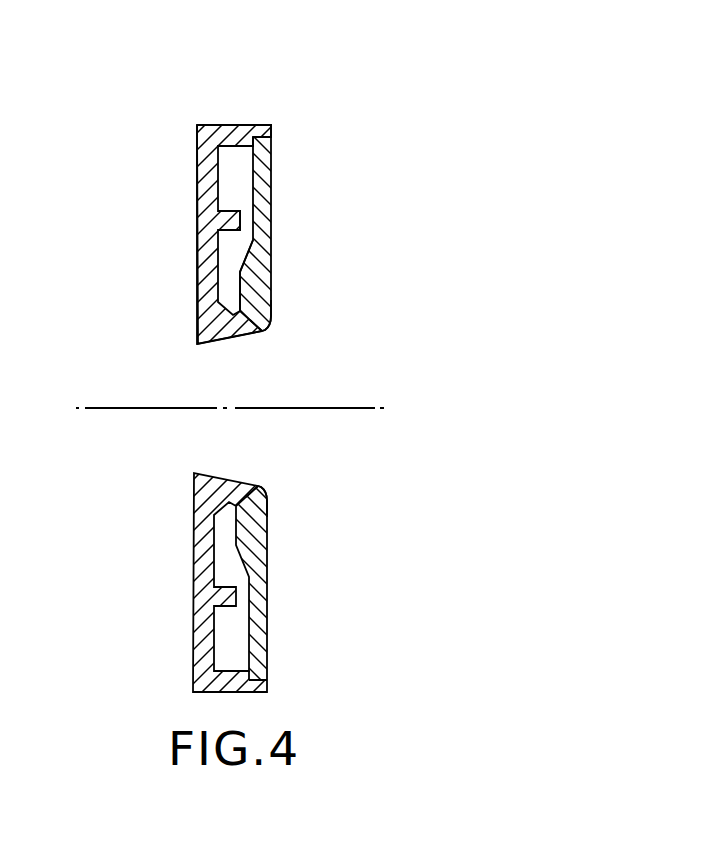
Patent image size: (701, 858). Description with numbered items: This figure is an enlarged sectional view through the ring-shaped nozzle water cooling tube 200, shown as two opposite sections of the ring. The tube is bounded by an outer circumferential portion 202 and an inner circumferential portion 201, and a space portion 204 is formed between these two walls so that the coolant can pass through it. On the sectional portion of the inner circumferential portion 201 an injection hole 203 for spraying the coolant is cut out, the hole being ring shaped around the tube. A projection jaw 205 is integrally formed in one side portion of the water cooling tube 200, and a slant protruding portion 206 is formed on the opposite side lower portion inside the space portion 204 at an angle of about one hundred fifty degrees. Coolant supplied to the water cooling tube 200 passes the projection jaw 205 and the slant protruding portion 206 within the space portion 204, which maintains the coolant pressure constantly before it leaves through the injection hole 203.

The water cooling tube 200 is at (294, 133).
The inner circumferential portion 201 is at (217, 342).
The outer circumferential portion 202 is at (237, 125).
The injection hole 203 is at (267, 325).
The space portion 204 is at (242, 184).
The projection jaw 205 is at (226, 214).
The slant protruding portion 206 is at (238, 287).